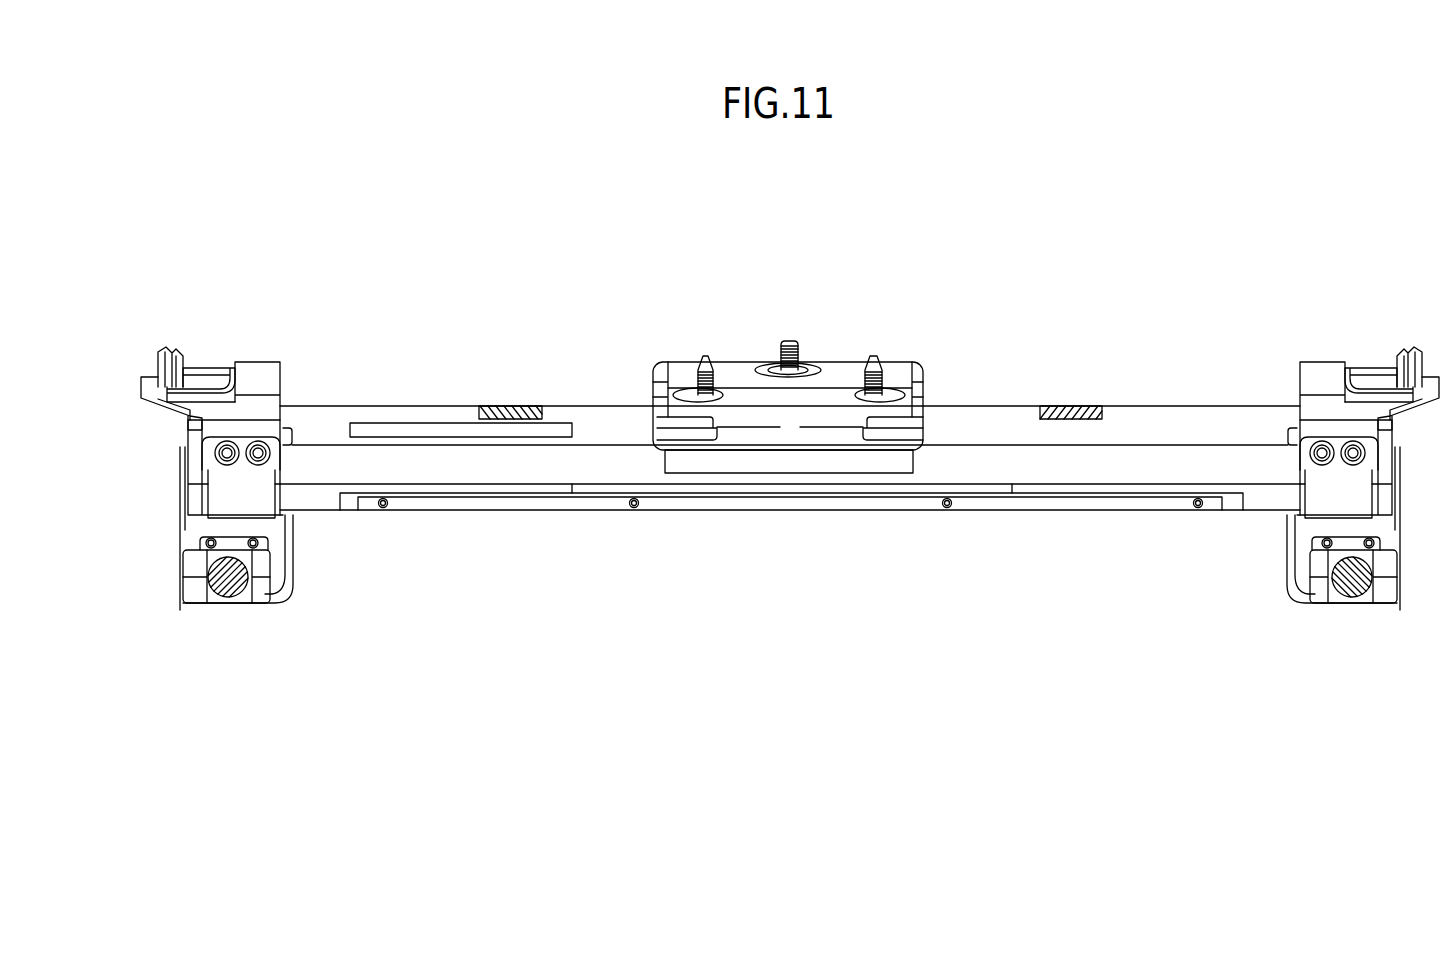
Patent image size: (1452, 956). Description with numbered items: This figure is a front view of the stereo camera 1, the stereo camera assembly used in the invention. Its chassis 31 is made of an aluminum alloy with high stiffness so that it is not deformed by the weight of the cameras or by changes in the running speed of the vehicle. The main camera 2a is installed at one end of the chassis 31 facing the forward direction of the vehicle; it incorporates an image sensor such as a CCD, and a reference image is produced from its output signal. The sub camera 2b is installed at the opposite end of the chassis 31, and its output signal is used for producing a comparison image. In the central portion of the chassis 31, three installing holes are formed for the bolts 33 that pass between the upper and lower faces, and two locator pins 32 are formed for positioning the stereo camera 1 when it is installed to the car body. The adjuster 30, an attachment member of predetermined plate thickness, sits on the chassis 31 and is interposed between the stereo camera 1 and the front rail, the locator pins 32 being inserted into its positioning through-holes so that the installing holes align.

The stereo camera 1 is at (773, 582).
The main camera 2a is at (183, 598).
The sub camera 2b is at (1397, 588).
The adjuster 30 is at (843, 367).
The chassis 31 is at (993, 410).
The locator pin 32 is at (706, 356).
The bolt 33 is at (796, 342).